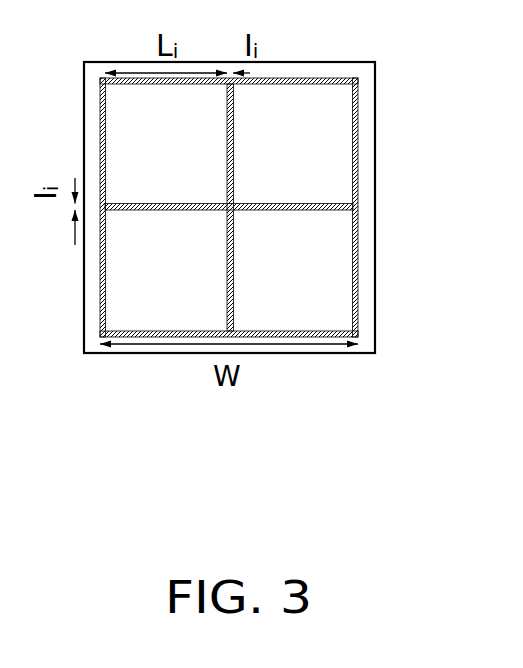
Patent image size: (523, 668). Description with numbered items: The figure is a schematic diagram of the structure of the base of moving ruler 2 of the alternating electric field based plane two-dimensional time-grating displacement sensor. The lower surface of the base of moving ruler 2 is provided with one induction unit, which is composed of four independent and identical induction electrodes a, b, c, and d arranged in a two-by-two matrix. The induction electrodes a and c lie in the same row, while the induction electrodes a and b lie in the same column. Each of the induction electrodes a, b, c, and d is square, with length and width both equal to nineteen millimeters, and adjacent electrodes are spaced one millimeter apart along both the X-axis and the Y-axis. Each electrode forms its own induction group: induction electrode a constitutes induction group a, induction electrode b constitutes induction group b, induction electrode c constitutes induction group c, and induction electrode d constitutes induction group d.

The base of moving ruler 2 is at (443, 100).
The induction electrode a is at (167, 270).
The induction electrode b is at (167, 144).
The induction electrode c is at (293, 270).
The induction electrode d is at (293, 144).